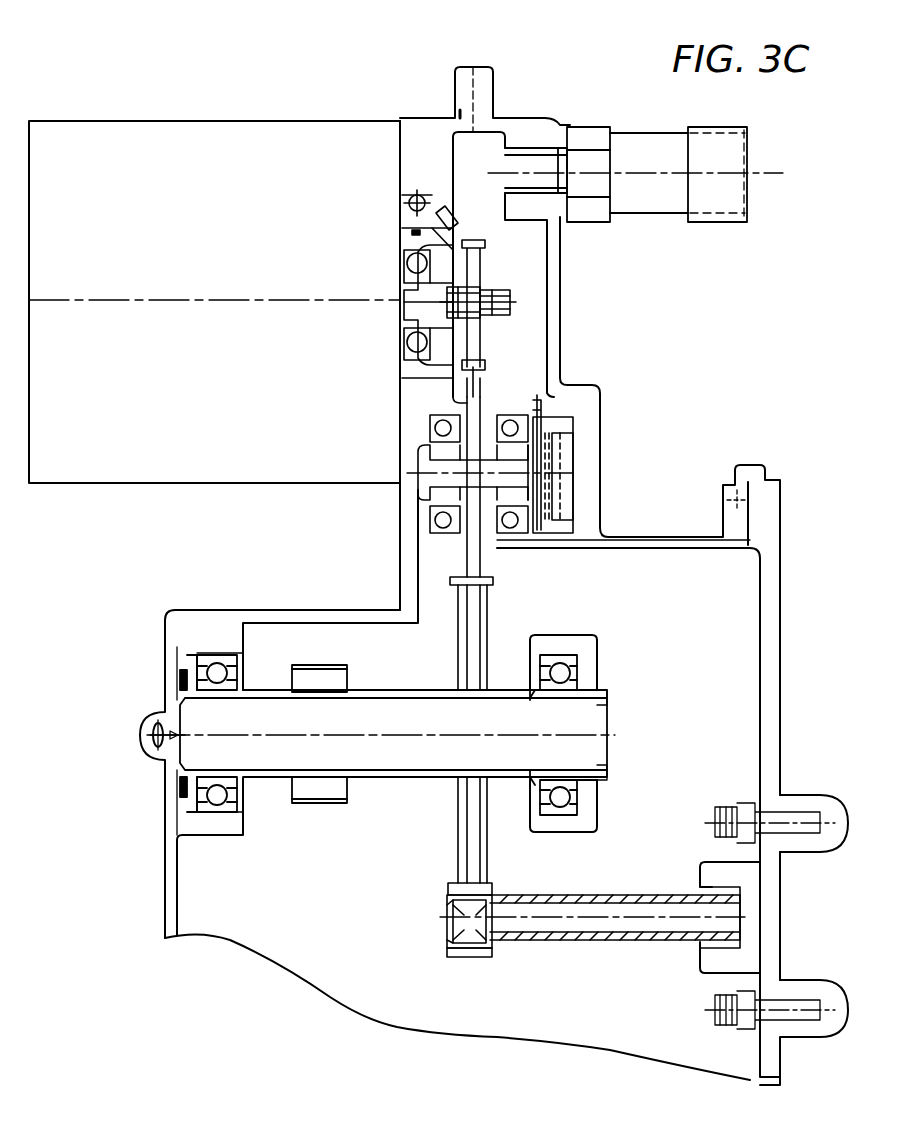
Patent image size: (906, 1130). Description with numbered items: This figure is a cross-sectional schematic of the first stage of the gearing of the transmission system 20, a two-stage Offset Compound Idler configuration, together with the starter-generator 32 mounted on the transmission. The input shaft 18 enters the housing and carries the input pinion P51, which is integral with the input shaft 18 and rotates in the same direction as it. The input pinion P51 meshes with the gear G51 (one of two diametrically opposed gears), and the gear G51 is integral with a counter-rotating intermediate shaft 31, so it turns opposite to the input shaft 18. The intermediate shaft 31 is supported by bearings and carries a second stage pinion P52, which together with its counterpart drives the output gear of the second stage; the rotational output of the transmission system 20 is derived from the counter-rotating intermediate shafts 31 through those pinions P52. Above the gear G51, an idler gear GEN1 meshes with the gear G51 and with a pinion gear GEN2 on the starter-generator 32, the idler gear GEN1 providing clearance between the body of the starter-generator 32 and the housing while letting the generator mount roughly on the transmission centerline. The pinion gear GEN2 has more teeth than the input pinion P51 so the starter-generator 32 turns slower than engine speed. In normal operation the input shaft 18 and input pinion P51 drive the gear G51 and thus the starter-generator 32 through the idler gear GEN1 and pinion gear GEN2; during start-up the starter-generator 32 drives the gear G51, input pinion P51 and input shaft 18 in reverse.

The transmission system 20 is at (729, 397).
The starter-generator 32 is at (298, 487).
The intermediate shaft 31 is at (393, 697).
The input shaft 18 is at (740, 893).
The idler gear GEN1 is at (470, 560).
The pinion gear GEN2 is at (482, 263).
The input pinion P51 is at (450, 950).
The gear G51 is at (455, 866).
The second stage pinion P52 is at (330, 805).